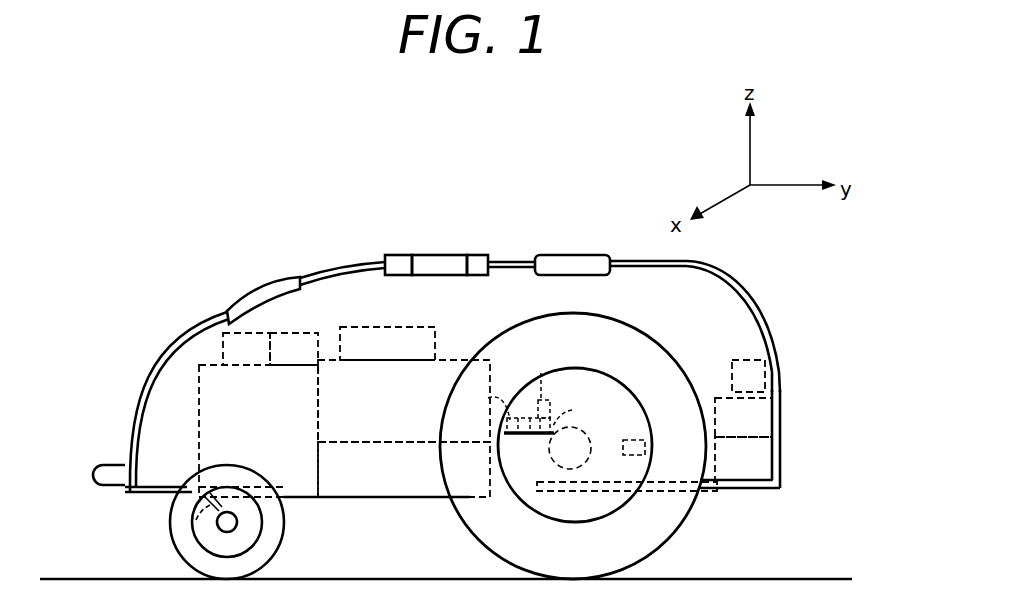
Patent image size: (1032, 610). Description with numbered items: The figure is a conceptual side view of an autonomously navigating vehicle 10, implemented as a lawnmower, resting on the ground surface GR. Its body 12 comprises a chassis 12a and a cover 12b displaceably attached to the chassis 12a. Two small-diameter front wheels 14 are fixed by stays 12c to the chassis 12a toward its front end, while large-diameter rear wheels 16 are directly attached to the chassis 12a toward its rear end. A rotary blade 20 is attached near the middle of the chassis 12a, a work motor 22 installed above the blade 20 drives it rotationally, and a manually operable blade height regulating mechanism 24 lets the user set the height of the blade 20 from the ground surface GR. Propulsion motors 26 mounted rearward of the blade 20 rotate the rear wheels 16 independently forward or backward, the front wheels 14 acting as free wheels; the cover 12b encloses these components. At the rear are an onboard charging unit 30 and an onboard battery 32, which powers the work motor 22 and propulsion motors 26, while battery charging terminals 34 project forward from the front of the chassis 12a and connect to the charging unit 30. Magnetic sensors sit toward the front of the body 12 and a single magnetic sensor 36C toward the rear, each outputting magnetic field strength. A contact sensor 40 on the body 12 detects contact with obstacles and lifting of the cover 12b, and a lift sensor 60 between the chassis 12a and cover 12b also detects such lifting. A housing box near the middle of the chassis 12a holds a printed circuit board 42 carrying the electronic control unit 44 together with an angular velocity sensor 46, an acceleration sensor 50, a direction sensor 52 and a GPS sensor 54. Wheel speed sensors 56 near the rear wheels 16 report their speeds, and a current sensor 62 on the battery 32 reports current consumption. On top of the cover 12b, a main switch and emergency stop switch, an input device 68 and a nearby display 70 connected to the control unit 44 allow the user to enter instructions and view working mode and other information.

The autonomously navigating vehicle 10 is at (730, 263).
The body 12 is at (808, 441).
The chassis 12a is at (782, 470).
The cover 12b is at (784, 378).
The stays 12c is at (216, 521).
The front wheels 14 is at (175, 550).
The rear wheels 16 is at (460, 541).
The blade 20 is at (416, 478).
The work motor 22 is at (416, 412).
The blade height regulating mechanism 24 is at (401, 355).
The propulsion motors 26 is at (588, 432).
The onboard charging unit 30 is at (757, 430).
The onboard battery 32 is at (757, 469).
The battery charging terminals 34 is at (118, 466).
The magnetic sensor 36C is at (578, 257).
The contact sensor 40 is at (259, 361).
The printed circuit board 42 is at (520, 436).
The electronic control unit 44 is at (482, 404).
The angular velocity sensor 46 is at (518, 418).
The acceleration sensor 50 is at (542, 375).
The direction sensor 52 is at (549, 401).
The GPS sensor 54 is at (576, 410).
The wheel speed sensors 56 is at (643, 440).
The lift sensor 60 is at (307, 361).
The current sensor 62 is at (762, 387).
The input device 68 is at (478, 262).
The display 70 is at (446, 262).
The ground surface GR is at (752, 557).